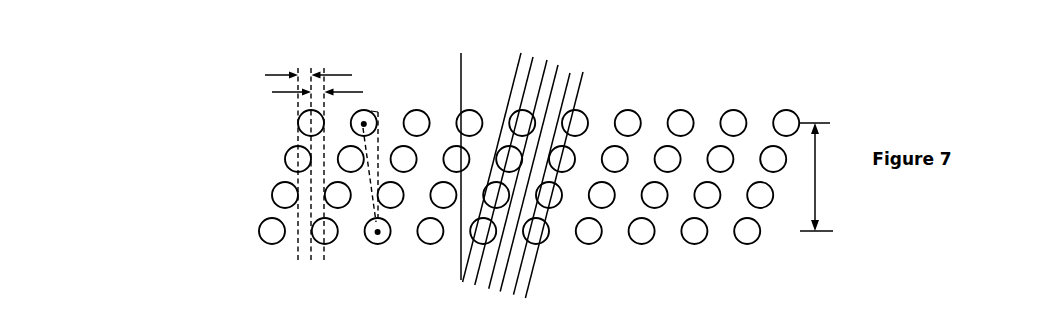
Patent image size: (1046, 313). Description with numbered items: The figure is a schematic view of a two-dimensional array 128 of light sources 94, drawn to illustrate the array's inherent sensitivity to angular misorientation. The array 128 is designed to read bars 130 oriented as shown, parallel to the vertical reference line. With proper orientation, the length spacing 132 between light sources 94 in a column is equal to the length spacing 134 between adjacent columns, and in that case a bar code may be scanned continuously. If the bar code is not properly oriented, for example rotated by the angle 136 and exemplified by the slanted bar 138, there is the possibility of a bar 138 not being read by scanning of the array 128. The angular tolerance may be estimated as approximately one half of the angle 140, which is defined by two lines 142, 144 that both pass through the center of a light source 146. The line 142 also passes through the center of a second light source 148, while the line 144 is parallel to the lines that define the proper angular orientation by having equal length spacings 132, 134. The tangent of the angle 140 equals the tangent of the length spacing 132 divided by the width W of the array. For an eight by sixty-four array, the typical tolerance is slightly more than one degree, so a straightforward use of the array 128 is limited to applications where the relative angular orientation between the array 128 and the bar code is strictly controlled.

The two-dimensional array 128 is at (128, 78).
The light source 94 is at (789, 119).
The bar 130 is at (457, 65).
The length spacing 132 is at (272, 92).
The length spacing 134 is at (265, 75).
The angle 136 is at (461, 86).
The bar 138 is at (556, 78).
The angle 140 is at (364, 121).
The line 142 is at (370, 200).
The line 144 is at (380, 213).
The light source 146 is at (378, 235).
The light source 148 is at (376, 103).